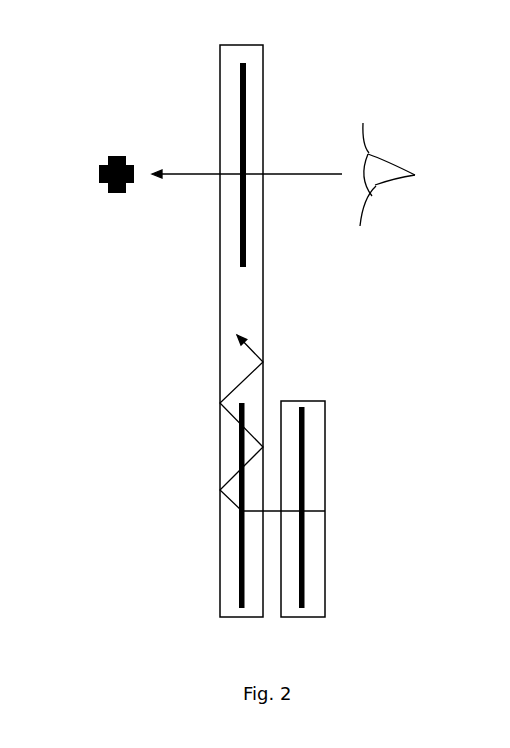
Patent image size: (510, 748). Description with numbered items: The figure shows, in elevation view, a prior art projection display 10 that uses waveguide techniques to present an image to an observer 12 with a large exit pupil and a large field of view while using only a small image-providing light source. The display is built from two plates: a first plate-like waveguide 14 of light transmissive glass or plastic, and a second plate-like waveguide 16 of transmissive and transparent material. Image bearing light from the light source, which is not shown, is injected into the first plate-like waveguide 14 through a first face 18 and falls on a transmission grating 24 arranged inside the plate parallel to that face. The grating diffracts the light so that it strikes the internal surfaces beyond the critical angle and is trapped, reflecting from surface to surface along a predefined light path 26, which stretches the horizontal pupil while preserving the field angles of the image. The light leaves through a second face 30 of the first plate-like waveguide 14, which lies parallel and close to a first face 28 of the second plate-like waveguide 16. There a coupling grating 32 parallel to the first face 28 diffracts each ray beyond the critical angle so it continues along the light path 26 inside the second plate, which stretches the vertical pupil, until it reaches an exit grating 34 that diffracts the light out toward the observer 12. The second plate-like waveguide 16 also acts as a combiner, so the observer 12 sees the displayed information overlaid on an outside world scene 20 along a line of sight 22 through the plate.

The projection display 10 is at (311, 62).
The observer 12 is at (374, 181).
The first plate-like waveguide 14 is at (317, 470).
The second plate-like waveguide 16 is at (253, 282).
The first face 18 is at (325, 593).
The outside world scene 20 is at (115, 157).
The line of sight 22 is at (187, 175).
The transmission grating 24 is at (303, 548).
The light path 26 is at (243, 374).
The first face 28 is at (279, 432).
The second face 30 is at (267, 405).
The coupling grating 32 is at (240, 580).
The exit grating 34 is at (242, 107).